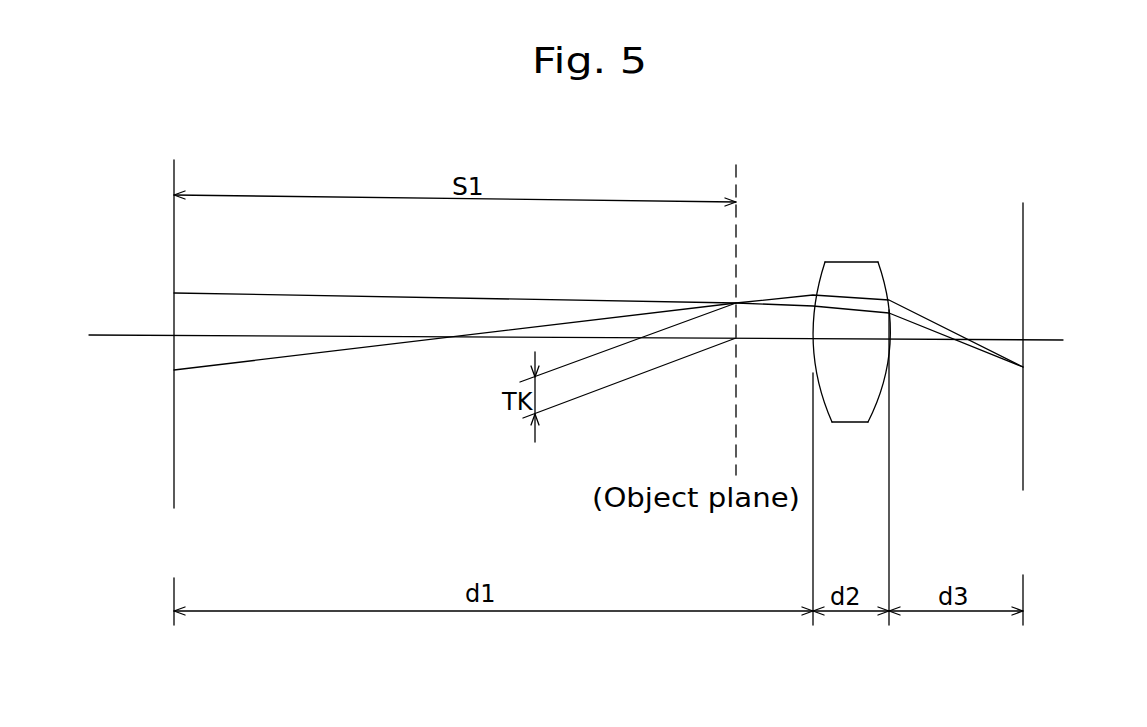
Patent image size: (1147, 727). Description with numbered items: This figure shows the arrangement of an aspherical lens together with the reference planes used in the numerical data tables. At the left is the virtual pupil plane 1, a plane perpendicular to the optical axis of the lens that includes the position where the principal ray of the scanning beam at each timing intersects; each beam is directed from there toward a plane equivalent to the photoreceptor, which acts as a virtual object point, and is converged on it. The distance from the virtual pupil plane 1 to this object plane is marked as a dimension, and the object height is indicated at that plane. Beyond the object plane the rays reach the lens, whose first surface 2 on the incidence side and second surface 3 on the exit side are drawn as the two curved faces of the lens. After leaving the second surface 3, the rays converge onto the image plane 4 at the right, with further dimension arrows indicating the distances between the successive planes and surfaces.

The virtual pupil plane 1 is at (174, 373).
The first surface of the lens 2 is at (838, 423).
The second surface of the lens 3 is at (888, 423).
The image plane 4 is at (1022, 395).